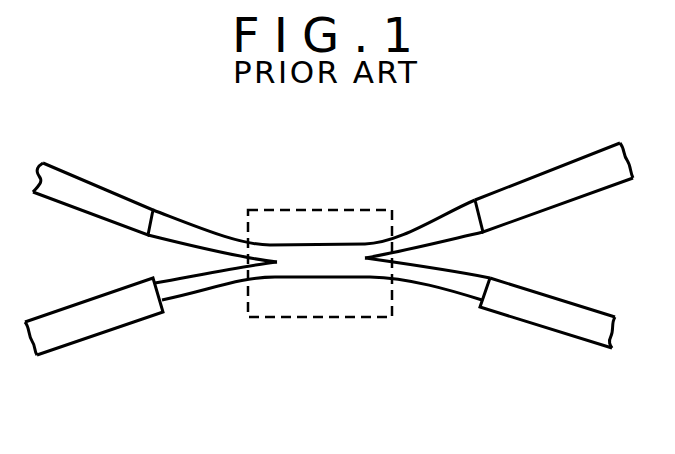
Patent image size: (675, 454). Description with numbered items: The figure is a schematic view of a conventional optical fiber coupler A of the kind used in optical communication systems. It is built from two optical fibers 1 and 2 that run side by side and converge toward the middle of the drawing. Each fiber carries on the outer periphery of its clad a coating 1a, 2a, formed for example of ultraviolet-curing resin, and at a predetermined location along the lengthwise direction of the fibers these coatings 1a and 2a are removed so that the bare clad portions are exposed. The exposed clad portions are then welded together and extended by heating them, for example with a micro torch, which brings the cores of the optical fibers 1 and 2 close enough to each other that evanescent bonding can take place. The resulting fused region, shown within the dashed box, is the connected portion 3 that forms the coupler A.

The optical fiber 1 is at (107, 192).
The coating 1a is at (147, 207).
The optical fiber 2 is at (85, 333).
The coating 2a is at (147, 308).
The connected portion 3 is at (316, 318).
The optical fiber coupler A is at (387, 183).